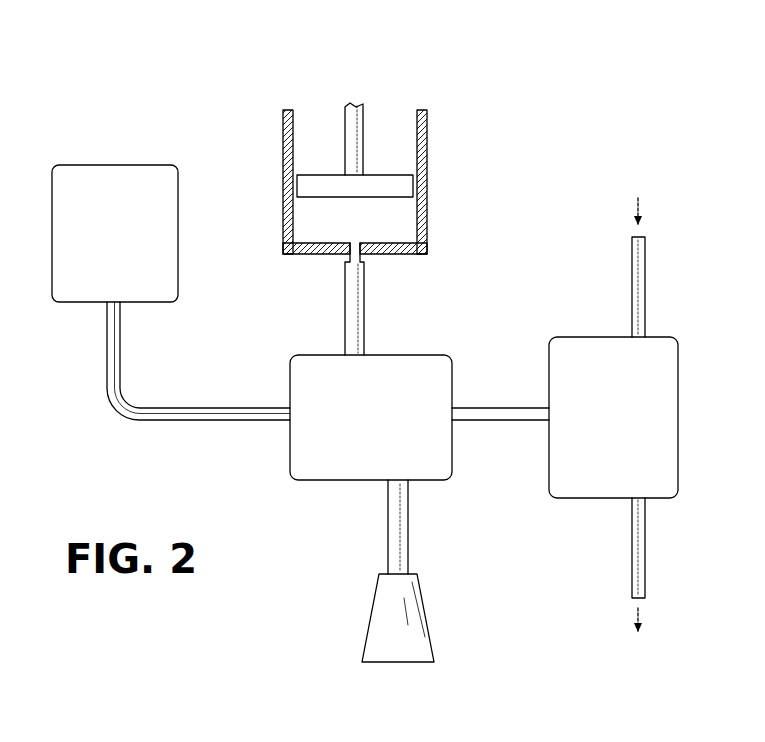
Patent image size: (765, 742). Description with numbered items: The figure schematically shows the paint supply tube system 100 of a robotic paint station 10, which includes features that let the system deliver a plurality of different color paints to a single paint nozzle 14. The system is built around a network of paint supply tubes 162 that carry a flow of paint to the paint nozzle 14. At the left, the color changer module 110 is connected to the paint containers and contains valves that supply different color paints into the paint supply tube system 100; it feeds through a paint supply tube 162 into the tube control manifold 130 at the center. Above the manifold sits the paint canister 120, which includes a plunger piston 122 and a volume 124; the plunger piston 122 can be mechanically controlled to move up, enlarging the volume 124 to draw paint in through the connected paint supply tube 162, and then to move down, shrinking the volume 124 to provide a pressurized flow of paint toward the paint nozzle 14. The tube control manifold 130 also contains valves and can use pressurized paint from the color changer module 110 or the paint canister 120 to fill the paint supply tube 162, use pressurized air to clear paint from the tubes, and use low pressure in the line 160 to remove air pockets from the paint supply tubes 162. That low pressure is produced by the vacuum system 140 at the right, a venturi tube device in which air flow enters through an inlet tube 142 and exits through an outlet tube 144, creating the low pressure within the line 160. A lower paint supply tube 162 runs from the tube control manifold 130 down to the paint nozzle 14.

The robotic paint station 10 is at (584, 147).
The paint nozzle 14 is at (427, 623).
The paint supply tube system 100 is at (108, 105).
The color changer module 110 is at (110, 165).
The paint canister 120 is at (283, 213).
The plunger piston 122 is at (363, 147).
The volume 124 is at (393, 220).
The tube control manifold 130 is at (412, 355).
The vacuum system 140 is at (678, 420).
The inlet tube 142 is at (645, 303).
The outlet tube 144 is at (645, 553).
The line 160 is at (472, 421).
The paint supply tubes 162 is at (232, 407).